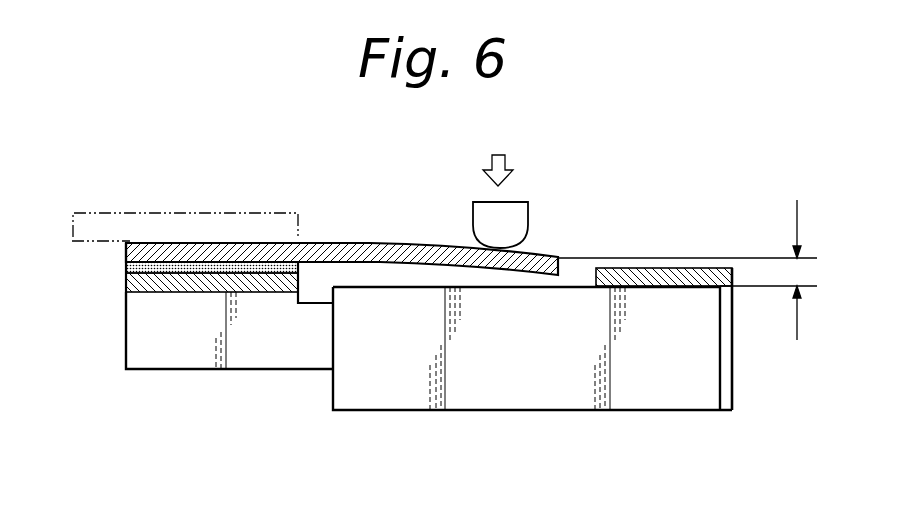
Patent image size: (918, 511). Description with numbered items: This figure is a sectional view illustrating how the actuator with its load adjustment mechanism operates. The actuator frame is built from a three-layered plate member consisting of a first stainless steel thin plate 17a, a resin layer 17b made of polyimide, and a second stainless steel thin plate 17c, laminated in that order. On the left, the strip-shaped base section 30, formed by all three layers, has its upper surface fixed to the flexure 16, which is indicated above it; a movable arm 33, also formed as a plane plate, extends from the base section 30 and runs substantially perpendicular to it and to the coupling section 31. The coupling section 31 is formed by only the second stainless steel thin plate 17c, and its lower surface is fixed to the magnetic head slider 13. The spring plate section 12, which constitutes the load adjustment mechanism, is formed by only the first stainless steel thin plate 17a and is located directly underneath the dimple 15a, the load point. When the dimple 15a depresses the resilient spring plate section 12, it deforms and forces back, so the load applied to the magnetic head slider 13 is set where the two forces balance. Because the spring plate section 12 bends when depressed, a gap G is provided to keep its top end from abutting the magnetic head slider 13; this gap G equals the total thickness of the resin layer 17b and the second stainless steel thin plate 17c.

The spring plate section 12 is at (413, 243).
The magnetic head slider 13 is at (543, 385).
The dimple 15a is at (518, 221).
The flexure 16 is at (242, 212).
The first stainless steel thin plate 17a is at (125, 255).
The resin layer 17b is at (126, 267).
The second stainless steel thin plate 17c is at (126, 283).
The base section 30 is at (202, 327).
The coupling section 31 is at (720, 286).
The movable arm 33 is at (268, 355).
The gap G is at (695, 270).